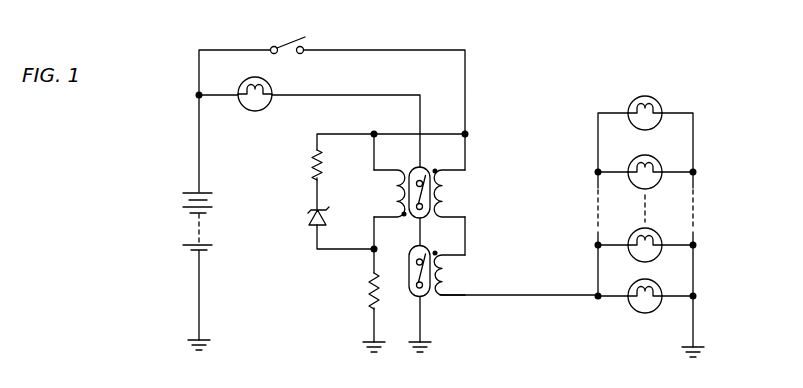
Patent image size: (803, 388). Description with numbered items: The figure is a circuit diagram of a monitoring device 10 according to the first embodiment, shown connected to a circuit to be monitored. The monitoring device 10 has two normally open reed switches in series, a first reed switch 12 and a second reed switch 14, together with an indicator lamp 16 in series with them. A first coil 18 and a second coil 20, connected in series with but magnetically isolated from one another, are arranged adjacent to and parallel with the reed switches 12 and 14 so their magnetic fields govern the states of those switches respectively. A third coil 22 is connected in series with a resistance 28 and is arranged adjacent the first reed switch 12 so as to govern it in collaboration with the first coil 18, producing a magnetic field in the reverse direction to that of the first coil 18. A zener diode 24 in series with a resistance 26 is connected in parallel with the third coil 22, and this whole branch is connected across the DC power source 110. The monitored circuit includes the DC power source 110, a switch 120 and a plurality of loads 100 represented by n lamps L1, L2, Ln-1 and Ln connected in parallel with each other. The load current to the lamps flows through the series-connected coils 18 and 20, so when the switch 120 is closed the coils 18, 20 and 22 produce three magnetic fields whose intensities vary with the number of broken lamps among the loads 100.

The monitoring device 10 is at (466, 256).
The first reed switch 12 is at (432, 214).
The second reed switch 14 is at (427, 295).
The indicator lamp 16 is at (252, 110).
The first coil 18 is at (448, 190).
The second coil 20 is at (467, 273).
The third coil 22 is at (397, 196).
The zener diode 24 is at (311, 234).
The resistance 26 is at (311, 176).
The resistance 28 is at (368, 295).
The loads 100 is at (652, 208).
The DC power source 110 is at (188, 202).
The switch 120 is at (292, 40).
The lamp L1 is at (657, 98).
The lamp L2 is at (651, 156).
The lamp Ln-1 is at (662, 232).
The lamp Ln is at (630, 311).